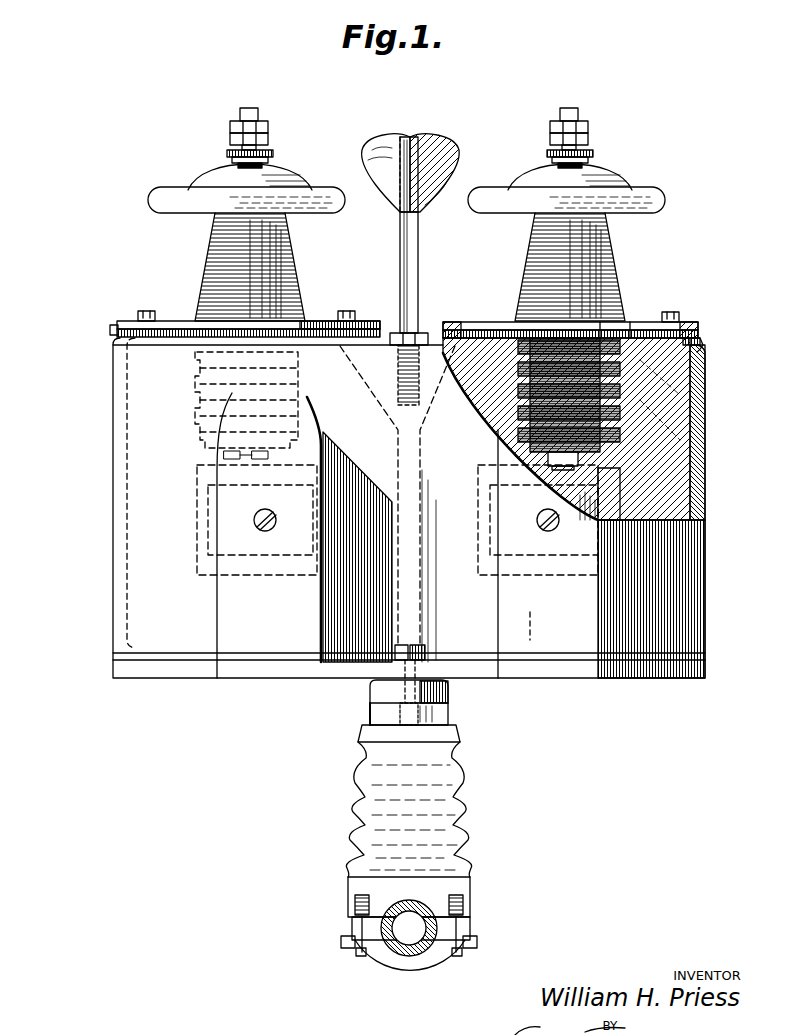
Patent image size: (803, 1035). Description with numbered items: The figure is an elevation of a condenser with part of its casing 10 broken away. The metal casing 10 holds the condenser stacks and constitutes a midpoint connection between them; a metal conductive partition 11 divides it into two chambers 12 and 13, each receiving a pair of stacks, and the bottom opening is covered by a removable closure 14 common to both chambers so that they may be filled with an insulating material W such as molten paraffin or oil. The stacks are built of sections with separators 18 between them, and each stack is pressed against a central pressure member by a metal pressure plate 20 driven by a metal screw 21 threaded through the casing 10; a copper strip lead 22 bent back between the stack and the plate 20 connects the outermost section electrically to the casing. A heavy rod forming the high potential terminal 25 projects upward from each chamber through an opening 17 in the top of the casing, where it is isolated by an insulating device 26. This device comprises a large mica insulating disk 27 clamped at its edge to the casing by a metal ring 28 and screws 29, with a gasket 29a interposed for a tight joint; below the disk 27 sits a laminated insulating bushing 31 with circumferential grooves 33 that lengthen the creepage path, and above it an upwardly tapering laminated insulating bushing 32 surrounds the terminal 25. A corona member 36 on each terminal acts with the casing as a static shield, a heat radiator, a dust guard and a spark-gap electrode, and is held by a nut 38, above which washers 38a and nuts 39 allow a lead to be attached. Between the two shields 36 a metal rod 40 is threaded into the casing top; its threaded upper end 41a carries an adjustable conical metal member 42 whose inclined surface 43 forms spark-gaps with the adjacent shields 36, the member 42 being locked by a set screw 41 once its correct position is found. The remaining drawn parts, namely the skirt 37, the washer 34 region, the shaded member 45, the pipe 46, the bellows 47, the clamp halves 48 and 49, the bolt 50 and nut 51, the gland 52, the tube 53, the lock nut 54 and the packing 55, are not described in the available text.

The casing 10 is at (700, 512).
The metal conductive partition 11 is at (420, 578).
The chamber 12 is at (138, 637).
The chamber 13 is at (660, 438).
The removable closure 14 is at (290, 680).
The opening 17 is at (703, 356).
The separator 18 is at (610, 482).
The metal pressure plate 20 is at (556, 492).
The metal screw 21 is at (256, 526).
The copper strip lead 22 is at (379, 535).
The high potential terminal 25 is at (250, 108).
The insulating device 26 is at (300, 320).
The insulating disk 27 is at (117, 330).
The metal ring 28 is at (117, 323).
The screw 29 is at (145, 311).
The gasket 29a is at (702, 340).
The insulating bushing 31 is at (630, 330).
The insulating bushing 32 is at (208, 250).
The corrugations or grooves 33 is at (500, 338).
The washer 34 is at (580, 462).
The corona member 36 is at (192, 186).
The insulator skirt 37 is at (148, 205).
The nut 38 is at (232, 160).
The washer 38a is at (272, 154).
The nut 39 is at (230, 126).
The metal rod or stud 40 is at (418, 290).
The set screw 41 is at (410, 137).
The threaded upper end 41a is at (400, 222).
The adjustable conical metal member 42 is at (440, 145).
The inclined surface 43 is at (425, 200).
The shaded partition wall 45 is at (347, 645).
The pipe 46 is at (388, 950).
The flexible bellows 47 is at (465, 810).
The clamp lower half 48 is at (382, 938).
The clamp block 49 is at (348, 892).
The clamp bolt 50 is at (476, 938).
The clamp nut 51 is at (478, 946).
The gland nut 52 is at (460, 733).
The outlet tube 53 is at (448, 690).
The lock nut 54 is at (425, 650).
The packing 55 is at (370, 715).
The insulating material W is at (680, 398).